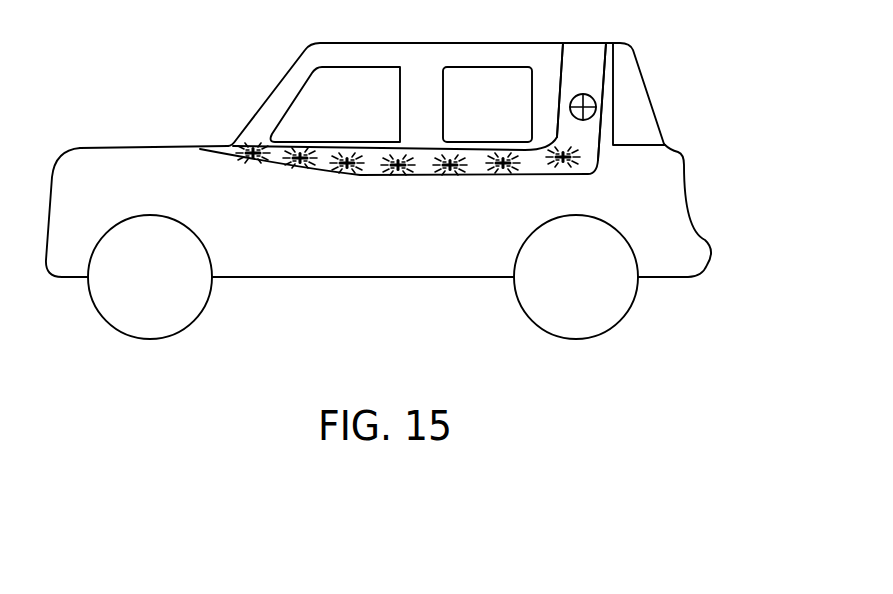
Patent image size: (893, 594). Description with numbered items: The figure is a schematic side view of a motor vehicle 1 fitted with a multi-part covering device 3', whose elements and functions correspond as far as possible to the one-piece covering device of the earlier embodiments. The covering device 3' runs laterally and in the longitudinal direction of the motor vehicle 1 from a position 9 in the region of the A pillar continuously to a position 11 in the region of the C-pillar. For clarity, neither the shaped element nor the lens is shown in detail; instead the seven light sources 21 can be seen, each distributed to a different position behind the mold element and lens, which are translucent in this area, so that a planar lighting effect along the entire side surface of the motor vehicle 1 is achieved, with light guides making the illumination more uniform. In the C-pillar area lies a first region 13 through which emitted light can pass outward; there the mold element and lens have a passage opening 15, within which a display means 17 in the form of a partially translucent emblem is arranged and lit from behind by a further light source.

The motor vehicle 1 is at (155, 50).
The multi-part covering device 3' is at (403, 109).
The position in the region of the A pillar 9 is at (220, 138).
The position in the region of the C-pillar 11 is at (620, 127).
The first region 13 is at (578, 81).
The passage opening 15 is at (599, 81).
The display means 17 is at (597, 107).
The light source 21 is at (450, 172).